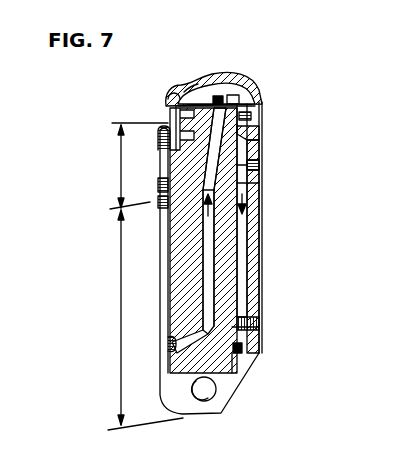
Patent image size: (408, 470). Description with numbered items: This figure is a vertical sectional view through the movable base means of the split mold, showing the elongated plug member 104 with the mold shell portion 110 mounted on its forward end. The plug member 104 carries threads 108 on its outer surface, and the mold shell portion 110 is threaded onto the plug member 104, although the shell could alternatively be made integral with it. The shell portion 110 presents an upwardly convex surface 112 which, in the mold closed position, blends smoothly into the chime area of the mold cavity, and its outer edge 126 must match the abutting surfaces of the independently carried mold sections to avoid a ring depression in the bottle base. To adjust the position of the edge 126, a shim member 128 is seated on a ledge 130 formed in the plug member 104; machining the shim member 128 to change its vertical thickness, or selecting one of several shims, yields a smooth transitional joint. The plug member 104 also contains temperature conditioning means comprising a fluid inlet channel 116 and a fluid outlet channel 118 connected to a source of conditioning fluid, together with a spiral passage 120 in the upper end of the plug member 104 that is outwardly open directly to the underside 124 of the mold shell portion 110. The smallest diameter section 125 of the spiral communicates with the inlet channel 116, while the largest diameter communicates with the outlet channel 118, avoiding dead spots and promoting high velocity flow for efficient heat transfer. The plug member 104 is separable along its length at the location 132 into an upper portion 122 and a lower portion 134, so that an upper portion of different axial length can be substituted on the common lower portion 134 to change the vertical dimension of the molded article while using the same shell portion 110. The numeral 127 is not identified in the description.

The plug member 104 is at (274, 266).
The threads 108 is at (260, 148).
The mold shell portion 110 is at (167, 130).
The upwardly convex surface 112 is at (178, 90).
The fluid inlet channel 116 is at (202, 261).
The fluid outlet channel 118 is at (241, 295).
The spiral passage 120 is at (252, 98).
The upper portion 122 is at (138, 166).
The underside 124 is at (258, 113).
The smallest diameter section 125 is at (209, 95).
The edge 126 is at (167, 97).
The sloped shoulder 127 is at (262, 124).
The shim member 128 is at (166, 183).
The ledge 130 is at (257, 162).
The separation 132 is at (261, 181).
The lower portion 134 is at (145, 320).